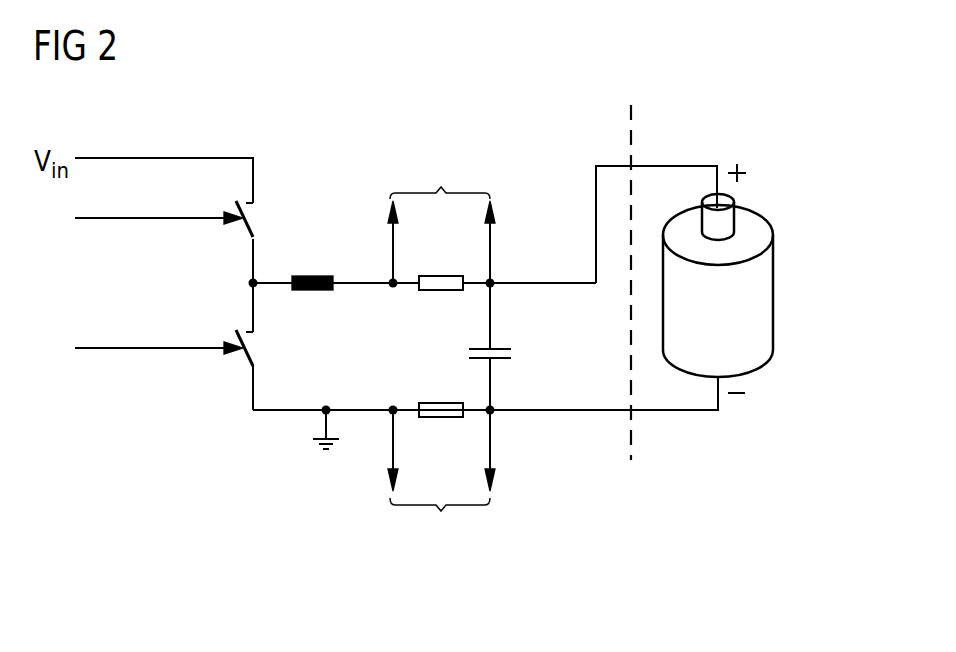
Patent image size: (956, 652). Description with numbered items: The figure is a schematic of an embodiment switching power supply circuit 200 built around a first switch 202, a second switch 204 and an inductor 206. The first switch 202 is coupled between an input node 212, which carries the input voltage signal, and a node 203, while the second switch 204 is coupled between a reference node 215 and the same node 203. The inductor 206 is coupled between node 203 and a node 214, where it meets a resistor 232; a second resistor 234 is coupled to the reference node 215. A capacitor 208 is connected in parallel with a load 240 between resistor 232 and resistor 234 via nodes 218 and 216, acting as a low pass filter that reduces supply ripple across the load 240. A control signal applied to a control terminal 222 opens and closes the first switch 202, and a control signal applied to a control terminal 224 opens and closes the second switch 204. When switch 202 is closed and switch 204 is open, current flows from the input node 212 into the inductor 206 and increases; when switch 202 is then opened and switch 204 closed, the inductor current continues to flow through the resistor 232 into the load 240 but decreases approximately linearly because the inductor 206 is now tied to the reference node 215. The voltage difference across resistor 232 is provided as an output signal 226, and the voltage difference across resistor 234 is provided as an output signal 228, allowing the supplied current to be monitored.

The switching power supply circuit 200 is at (213, 430).
The first switch 202 is at (249, 222).
The node 203 is at (249, 283).
The second switch 204 is at (243, 355).
The inductor 206 is at (313, 291).
The capacitor 208 is at (513, 355).
The input node 212 is at (199, 156).
The node 214 is at (370, 287).
The reference node 215 is at (313, 440).
The node 216 is at (688, 412).
The node 218 is at (669, 165).
The control terminal 222 is at (118, 222).
The control terminal 224 is at (118, 351).
The output signal 226 is at (441, 148).
The output signal 228 is at (440, 550).
The resistor 232 is at (443, 291).
The resistor 234 is at (441, 418).
The load 240 is at (776, 298).